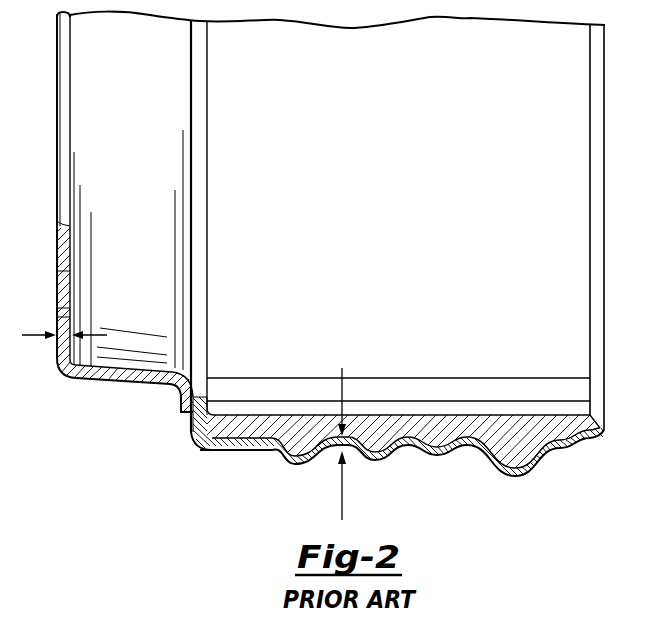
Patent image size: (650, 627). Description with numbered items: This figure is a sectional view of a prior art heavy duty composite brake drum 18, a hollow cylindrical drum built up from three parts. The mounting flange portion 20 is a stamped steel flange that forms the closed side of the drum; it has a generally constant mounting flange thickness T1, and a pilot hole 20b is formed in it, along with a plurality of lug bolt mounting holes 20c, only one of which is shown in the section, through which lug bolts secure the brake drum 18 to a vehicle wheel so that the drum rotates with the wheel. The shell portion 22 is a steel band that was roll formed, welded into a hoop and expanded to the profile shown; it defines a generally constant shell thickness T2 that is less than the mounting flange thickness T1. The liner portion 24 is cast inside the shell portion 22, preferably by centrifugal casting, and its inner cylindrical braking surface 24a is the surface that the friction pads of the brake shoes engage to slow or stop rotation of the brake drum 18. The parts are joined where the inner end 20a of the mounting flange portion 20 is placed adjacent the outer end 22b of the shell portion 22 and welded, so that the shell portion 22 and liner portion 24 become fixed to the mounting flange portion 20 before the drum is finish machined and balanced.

The composite brake drum 18 is at (198, 460).
The mounting flange portion 20 is at (66, 373).
The inner end of the mounting flange portion 20a is at (200, 374).
The pilot hole 20b is at (58, 219).
The lug bolt mounting hole 20c is at (58, 300).
The shell portion 22 is at (382, 457).
The outer end of the shell portion 22b is at (192, 426).
The liner portion 24 is at (403, 428).
The inner cylindrical braking surface 24a is at (362, 419).
The mounting flange thickness T1 is at (57, 351).
The shell thickness T2 is at (334, 466).